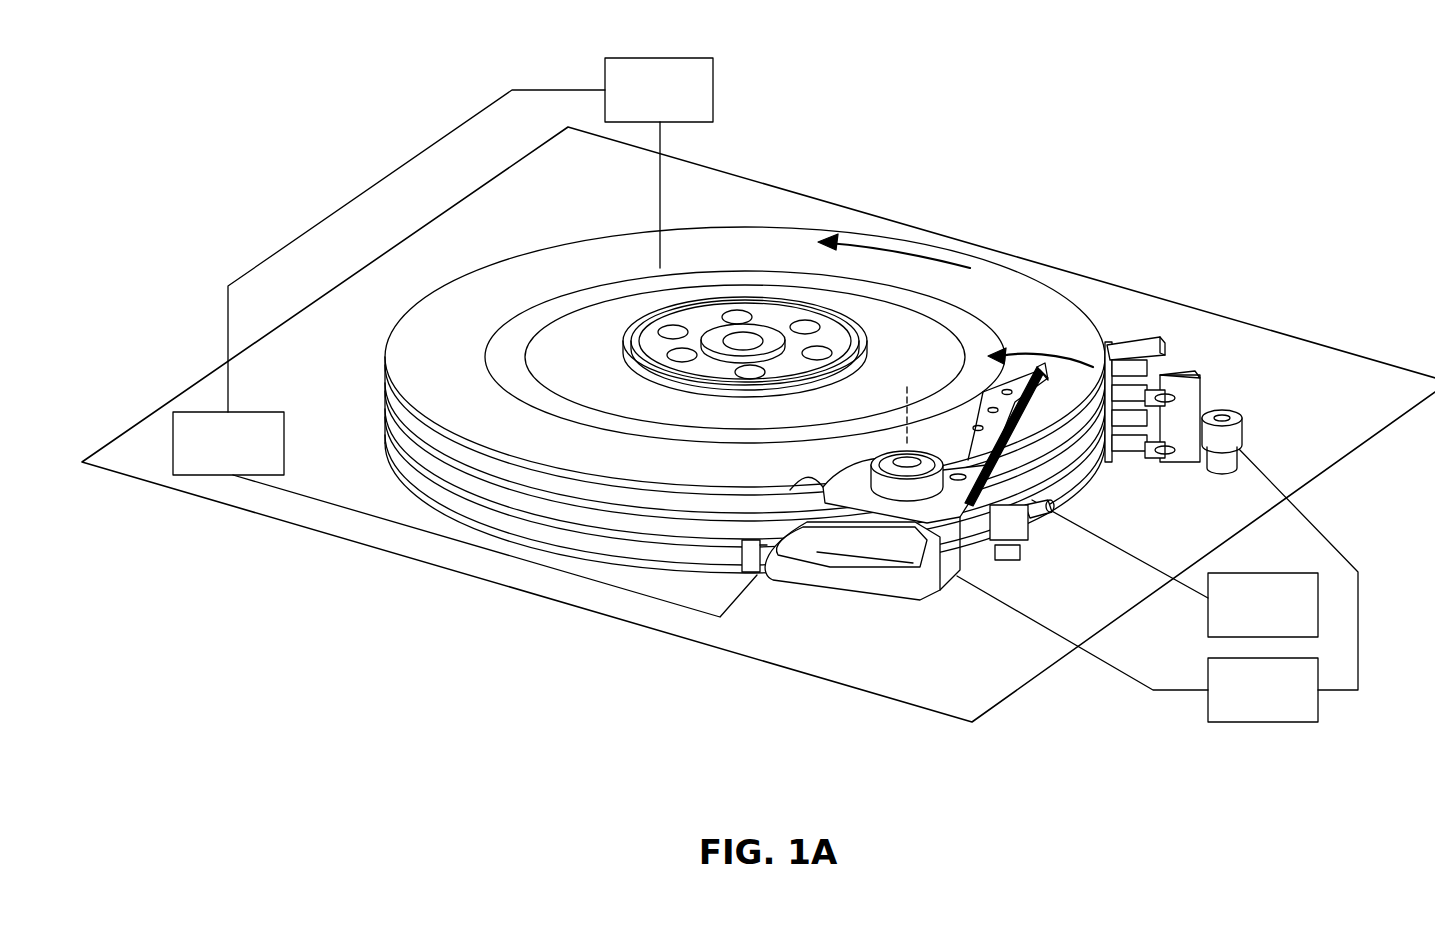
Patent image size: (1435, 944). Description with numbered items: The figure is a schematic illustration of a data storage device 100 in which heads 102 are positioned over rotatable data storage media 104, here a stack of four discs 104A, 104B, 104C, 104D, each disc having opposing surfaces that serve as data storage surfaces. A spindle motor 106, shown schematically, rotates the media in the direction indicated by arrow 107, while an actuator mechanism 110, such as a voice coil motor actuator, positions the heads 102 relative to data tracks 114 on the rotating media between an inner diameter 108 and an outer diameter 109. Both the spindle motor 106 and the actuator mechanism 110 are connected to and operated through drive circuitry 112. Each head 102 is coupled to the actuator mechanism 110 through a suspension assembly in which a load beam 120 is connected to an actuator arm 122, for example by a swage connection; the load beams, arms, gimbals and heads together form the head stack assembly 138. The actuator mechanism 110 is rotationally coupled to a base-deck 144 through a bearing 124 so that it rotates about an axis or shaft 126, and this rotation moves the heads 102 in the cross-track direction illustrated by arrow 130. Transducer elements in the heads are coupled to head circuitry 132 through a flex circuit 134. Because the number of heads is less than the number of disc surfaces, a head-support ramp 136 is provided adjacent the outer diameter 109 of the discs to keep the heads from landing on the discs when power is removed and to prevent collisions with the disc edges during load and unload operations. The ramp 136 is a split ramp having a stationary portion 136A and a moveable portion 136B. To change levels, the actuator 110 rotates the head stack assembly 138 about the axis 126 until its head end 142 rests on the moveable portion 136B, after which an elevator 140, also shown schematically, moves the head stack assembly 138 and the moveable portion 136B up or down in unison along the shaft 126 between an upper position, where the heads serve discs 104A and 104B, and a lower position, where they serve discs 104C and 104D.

The data storage device 100 is at (1210, 148).
The heads 102 is at (1063, 352).
The data storage media 104 is at (707, 366).
The disc 104A is at (388, 384).
The disc 104B is at (388, 410).
The disc 104C is at (388, 435).
The disc 104D is at (388, 460).
The spindle motor 106 is at (713, 62).
The arrow 107 is at (897, 256).
The inner diameter 108 is at (780, 296).
The outer diameter 109 is at (952, 305).
The actuator mechanism 110 is at (851, 506).
The drive circuitry 112 is at (197, 412).
The data tracks 114 is at (1002, 345).
The load beam 120 is at (1045, 400).
The actuator arm 122 is at (1008, 440).
The bearing 124 is at (878, 492).
The axis or shaft 126 is at (907, 398).
The arrow 130 is at (1132, 340).
The head circuitry 132 is at (1208, 614).
The flex circuit 134 is at (1030, 505).
The head-support ramp 136 is at (1203, 379).
The stationary portion 136A is at (1140, 335).
The moveable portion 136B is at (1200, 402).
The head stack assembly 138 is at (1007, 520).
The elevator 140 is at (1222, 722).
The head end 142 is at (1038, 365).
The base-deck 144 is at (328, 517).